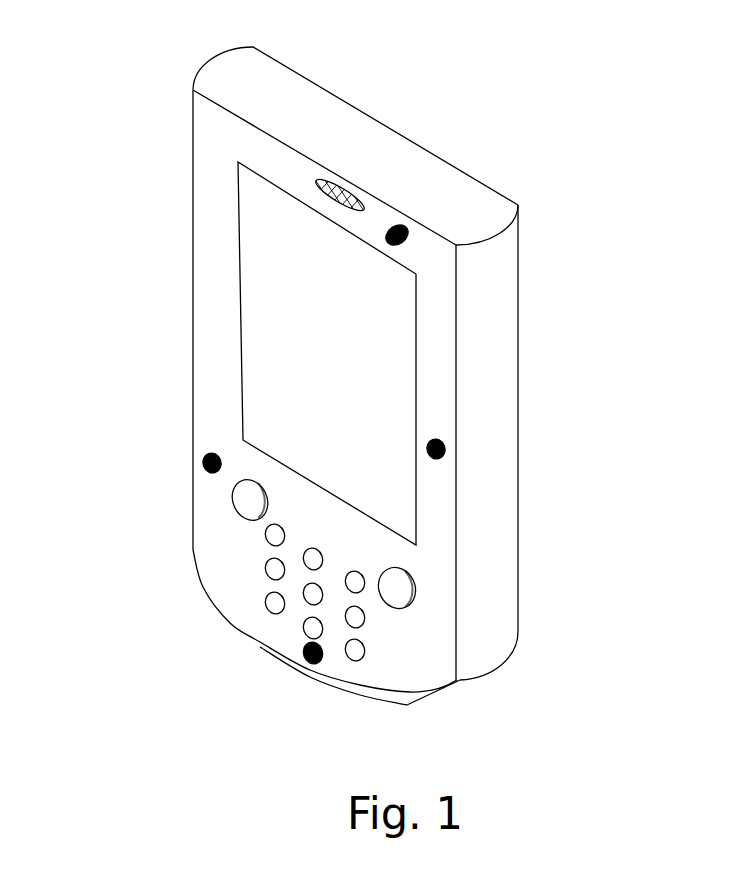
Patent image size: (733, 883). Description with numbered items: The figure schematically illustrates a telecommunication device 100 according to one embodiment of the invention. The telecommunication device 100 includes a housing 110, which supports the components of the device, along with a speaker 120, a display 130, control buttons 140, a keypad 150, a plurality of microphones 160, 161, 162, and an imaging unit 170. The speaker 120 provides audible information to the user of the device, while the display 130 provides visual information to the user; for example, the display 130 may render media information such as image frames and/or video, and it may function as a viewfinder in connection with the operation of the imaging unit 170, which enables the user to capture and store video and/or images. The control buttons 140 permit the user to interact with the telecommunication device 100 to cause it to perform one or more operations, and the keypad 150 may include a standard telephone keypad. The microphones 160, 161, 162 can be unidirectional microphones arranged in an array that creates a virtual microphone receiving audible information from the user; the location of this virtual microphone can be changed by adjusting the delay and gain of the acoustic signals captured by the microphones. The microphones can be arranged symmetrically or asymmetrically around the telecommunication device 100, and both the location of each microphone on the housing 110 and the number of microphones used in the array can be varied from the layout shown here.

The telecommunication device 100 is at (150, 120).
The housing 110 is at (485, 315).
The speaker 120 is at (337, 187).
The display 130 is at (272, 302).
The control buttons 140 is at (250, 507).
The keypad 150 is at (260, 563).
The microphone 160 is at (310, 660).
The microphone 161 is at (205, 462).
The microphone 162 is at (447, 443).
The imaging unit 170 is at (407, 233).